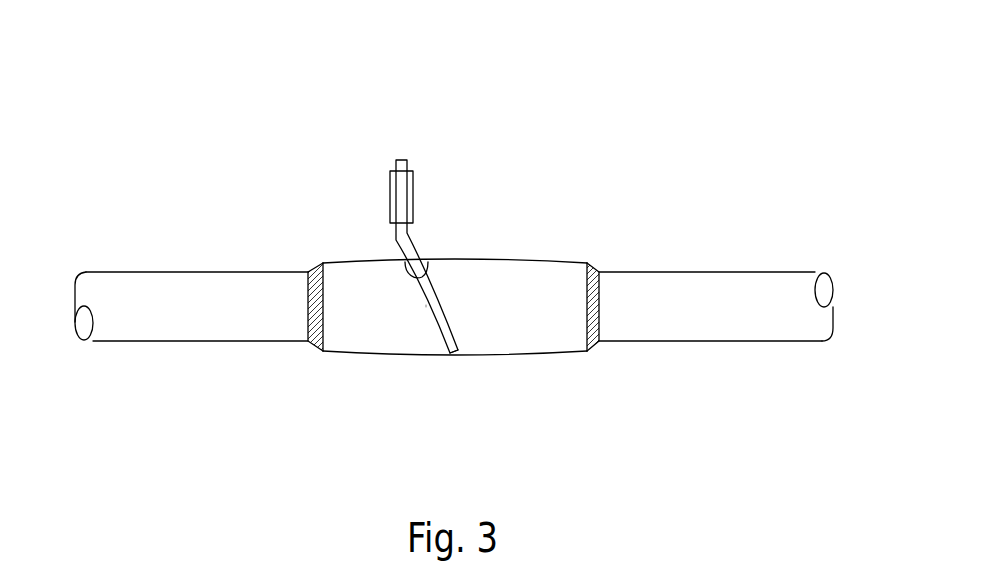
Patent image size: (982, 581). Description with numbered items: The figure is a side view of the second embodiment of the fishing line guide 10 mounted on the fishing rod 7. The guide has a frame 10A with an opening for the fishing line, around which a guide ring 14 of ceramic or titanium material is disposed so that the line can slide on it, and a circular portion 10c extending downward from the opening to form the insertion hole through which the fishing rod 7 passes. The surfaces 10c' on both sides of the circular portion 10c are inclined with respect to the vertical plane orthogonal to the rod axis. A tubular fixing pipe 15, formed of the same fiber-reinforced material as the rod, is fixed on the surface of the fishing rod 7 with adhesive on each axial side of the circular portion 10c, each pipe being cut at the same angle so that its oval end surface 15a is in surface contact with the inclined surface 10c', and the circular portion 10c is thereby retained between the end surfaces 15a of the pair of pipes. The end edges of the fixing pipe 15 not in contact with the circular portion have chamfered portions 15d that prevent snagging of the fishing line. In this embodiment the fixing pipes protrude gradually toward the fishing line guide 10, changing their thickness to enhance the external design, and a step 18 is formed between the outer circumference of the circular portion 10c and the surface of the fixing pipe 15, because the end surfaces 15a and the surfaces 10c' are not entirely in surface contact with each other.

The fishing rod 7 is at (178, 283).
The fishing line guide 10 is at (427, 97).
The frame 10A is at (400, 160).
The guide ring 14 is at (391, 190).
The fixing pipe 15 is at (552, 262).
The end surface 15a is at (405, 262).
The chamfered portion 15d is at (313, 313).
The circular portion 10c is at (465, 261).
The inclined surface 10c' is at (413, 310).
The step 18 is at (456, 362).